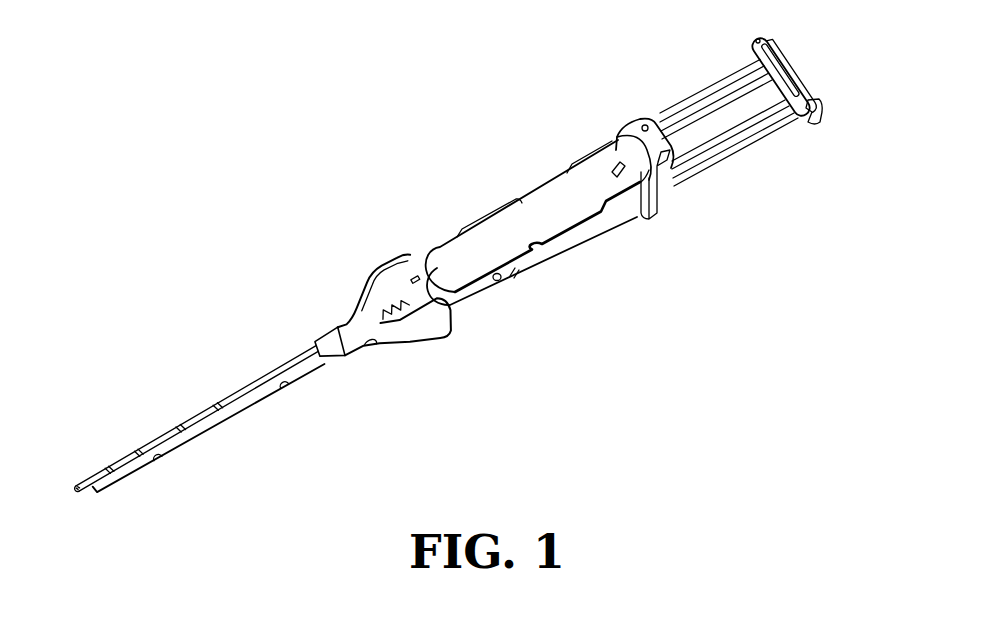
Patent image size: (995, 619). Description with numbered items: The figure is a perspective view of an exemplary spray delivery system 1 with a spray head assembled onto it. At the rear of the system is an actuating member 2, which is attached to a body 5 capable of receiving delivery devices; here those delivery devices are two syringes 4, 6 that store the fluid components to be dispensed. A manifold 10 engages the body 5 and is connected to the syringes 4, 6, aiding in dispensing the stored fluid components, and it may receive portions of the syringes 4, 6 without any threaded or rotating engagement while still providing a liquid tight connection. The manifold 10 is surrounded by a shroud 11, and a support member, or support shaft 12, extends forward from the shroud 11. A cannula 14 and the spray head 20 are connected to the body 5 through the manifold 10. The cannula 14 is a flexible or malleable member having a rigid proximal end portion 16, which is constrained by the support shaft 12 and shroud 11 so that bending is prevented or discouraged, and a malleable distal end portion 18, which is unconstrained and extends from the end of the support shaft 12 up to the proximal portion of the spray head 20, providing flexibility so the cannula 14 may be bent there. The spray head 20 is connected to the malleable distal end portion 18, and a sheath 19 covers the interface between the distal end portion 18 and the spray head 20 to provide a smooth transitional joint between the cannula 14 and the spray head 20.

The spray delivery system 1 is at (503, 96).
The actuating member 2 is at (799, 66).
The syringe 4 is at (491, 207).
The body 5 is at (556, 197).
The syringe 6 is at (538, 259).
The manifold 10 is at (391, 273).
The shroud 11 is at (332, 338).
The support shaft 12 is at (252, 374).
The cannula 14 is at (178, 427).
The proximal end portion 16 is at (287, 388).
The distal end portion 18 is at (157, 458).
The sheath 19 is at (117, 462).
The spray head 20 is at (77, 488).